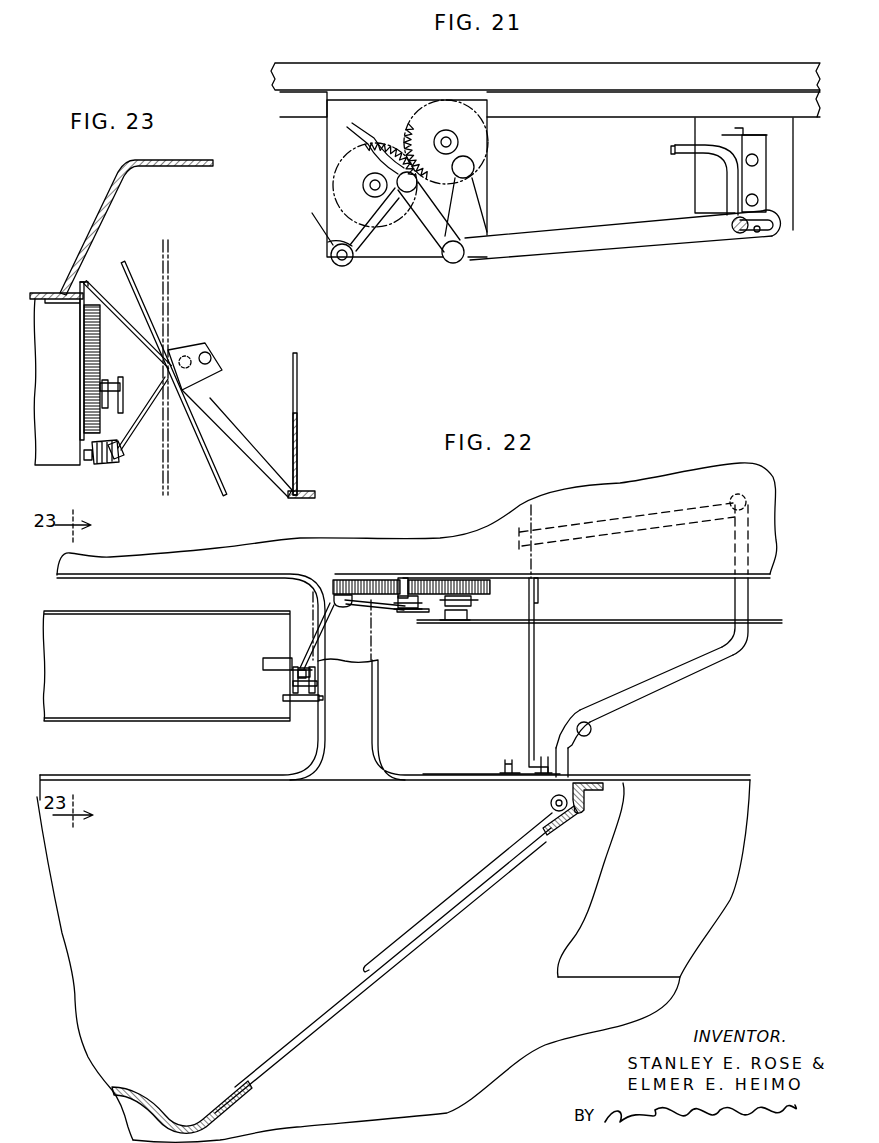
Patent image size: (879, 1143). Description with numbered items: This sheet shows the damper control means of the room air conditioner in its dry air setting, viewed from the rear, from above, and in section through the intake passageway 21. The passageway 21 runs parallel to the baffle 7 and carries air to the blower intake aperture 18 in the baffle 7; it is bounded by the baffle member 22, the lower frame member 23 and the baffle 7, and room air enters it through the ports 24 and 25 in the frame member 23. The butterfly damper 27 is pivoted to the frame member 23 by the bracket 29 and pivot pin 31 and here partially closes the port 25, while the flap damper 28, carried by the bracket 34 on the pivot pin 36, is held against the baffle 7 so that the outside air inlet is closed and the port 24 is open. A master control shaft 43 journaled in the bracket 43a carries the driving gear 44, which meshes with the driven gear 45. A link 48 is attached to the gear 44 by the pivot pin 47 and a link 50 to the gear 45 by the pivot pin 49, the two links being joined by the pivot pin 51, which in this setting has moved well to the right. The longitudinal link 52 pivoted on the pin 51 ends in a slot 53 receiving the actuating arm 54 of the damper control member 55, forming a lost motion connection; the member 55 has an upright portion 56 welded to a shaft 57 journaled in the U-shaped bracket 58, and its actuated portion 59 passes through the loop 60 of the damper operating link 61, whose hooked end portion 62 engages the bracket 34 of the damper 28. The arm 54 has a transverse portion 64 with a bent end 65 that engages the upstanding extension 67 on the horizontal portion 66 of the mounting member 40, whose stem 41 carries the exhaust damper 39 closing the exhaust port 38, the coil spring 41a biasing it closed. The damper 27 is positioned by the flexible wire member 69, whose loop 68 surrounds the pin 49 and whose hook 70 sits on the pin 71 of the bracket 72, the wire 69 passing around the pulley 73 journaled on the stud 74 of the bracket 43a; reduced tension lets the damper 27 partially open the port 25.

In FIG. 23, the baffle 7 is at (298, 443).
In FIG. 23, the intake aperture 18 is at (307, 376).
In FIG. 23, the intake passageway 21 is at (188, 184).
In FIG. 23, the baffle member 22 is at (117, 172).
In FIG. 21, the lower frame member 23 is at (612, 72).
In FIG. 22, the lower frame member 23 is at (333, 777).
In FIG. 22, the room air intake port 24 is at (400, 716).
In FIG. 23, the room air intake port 25 is at (258, 455).
In FIG. 22, the room air intake port 25 is at (213, 770).
In FIG. 23, the damper 27 is at (127, 260).
In FIG. 22, the damper 27 is at (127, 703).
In FIG. 22, the damper 28 is at (713, 773).
In FIG. 22, the bracket 29 is at (286, 683).
In FIG. 22, the pivot pin 31 is at (283, 700).
In FIG. 22, the bracket 34 is at (527, 765).
In FIG. 22, the pivot pin 36 is at (505, 768).
In FIG. 22, the exhaust port 38 is at (243, 1090).
In FIG. 22, the exhaust damper 39 is at (330, 1000).
In FIG. 22, the mounting member 40 is at (457, 887).
In FIG. 22, the stem portion 41 is at (580, 812).
In FIG. 22, the coil spring 41a is at (570, 830).
In FIG. 21, the shaft 43 is at (433, 133).
In FIG. 21, the bracket 43a is at (407, 252).
In FIG. 23, the bracket 43a is at (50, 458).
In FIG. 21, the gear member 44 is at (475, 135).
In FIG. 23, the gear member 44 is at (80, 312).
In FIG. 22, the gear member 44 is at (455, 578).
In FIG. 21, the second gear 45 is at (347, 178).
In FIG. 23, the second gear 45 is at (84, 365).
In FIG. 22, the second gear 45 is at (355, 575).
In FIG. 21, the pivot pin 47 is at (466, 172).
In FIG. 21, the link 48 is at (463, 208).
In FIG. 22, the link 48 is at (478, 603).
In FIG. 21, the pivot pin 49 is at (365, 142).
In FIG. 22, the pivot pin 49 is at (412, 607).
In FIG. 21, the link 50 is at (433, 218).
In FIG. 23, the link 50 is at (122, 395).
In FIG. 22, the link 50 is at (427, 612).
In FIG. 21, the pivot pin 51 is at (457, 258).
In FIG. 22, the pivot pin 51 is at (458, 620).
In FIG. 21, the link 52 is at (583, 243).
In FIG. 22, the link 52 is at (603, 622).
In FIG. 21, the slot 53 is at (760, 228).
In FIG. 21, the actuating arm 54 is at (742, 233).
In FIG. 22, the actuating arm 54 is at (747, 647).
In FIG. 22, the damper control member 55 is at (753, 602).
In FIG. 21, the upright portion 56 is at (735, 183).
In FIG. 22, the upright portion 56 is at (747, 495).
In FIG. 21, the shaft 57 is at (740, 128).
In FIG. 22, the shaft 57 is at (730, 493).
In FIG. 21, the U-shaped bracket 58 is at (757, 180).
In FIG. 21, the actuated portion 59 is at (678, 148).
In FIG. 22, the actuated portion 59 is at (610, 512).
In FIG. 22, the loop 60 is at (537, 557).
In FIG. 22, the damper operating link 61 is at (540, 645).
In FIG. 22, the hooked end portion 62 is at (551, 750).
In FIG. 22, the transverse portion 64 is at (673, 680).
In FIG. 22, the bent end 65 is at (580, 735).
In FIG. 22, the horizontal portion 66 is at (578, 760).
In FIG. 22, the upstanding extension 67 is at (595, 730).
In FIG. 23, the loop 68 is at (107, 378).
In FIG. 22, the loop 68 is at (408, 578).
In FIG. 23, the flexible wire member 69 is at (120, 380).
In FIG. 22, the flexible wire member 69 is at (328, 602).
In FIG. 22, the hook 70 is at (310, 665).
In FIG. 22, the pin 71 is at (312, 678).
In FIG. 22, the bracket 72 is at (318, 690).
In FIG. 23, the pulley 73 is at (120, 458).
In FIG. 22, the pulley 73 is at (345, 608).
In FIG. 23, the stud 74 is at (100, 462).